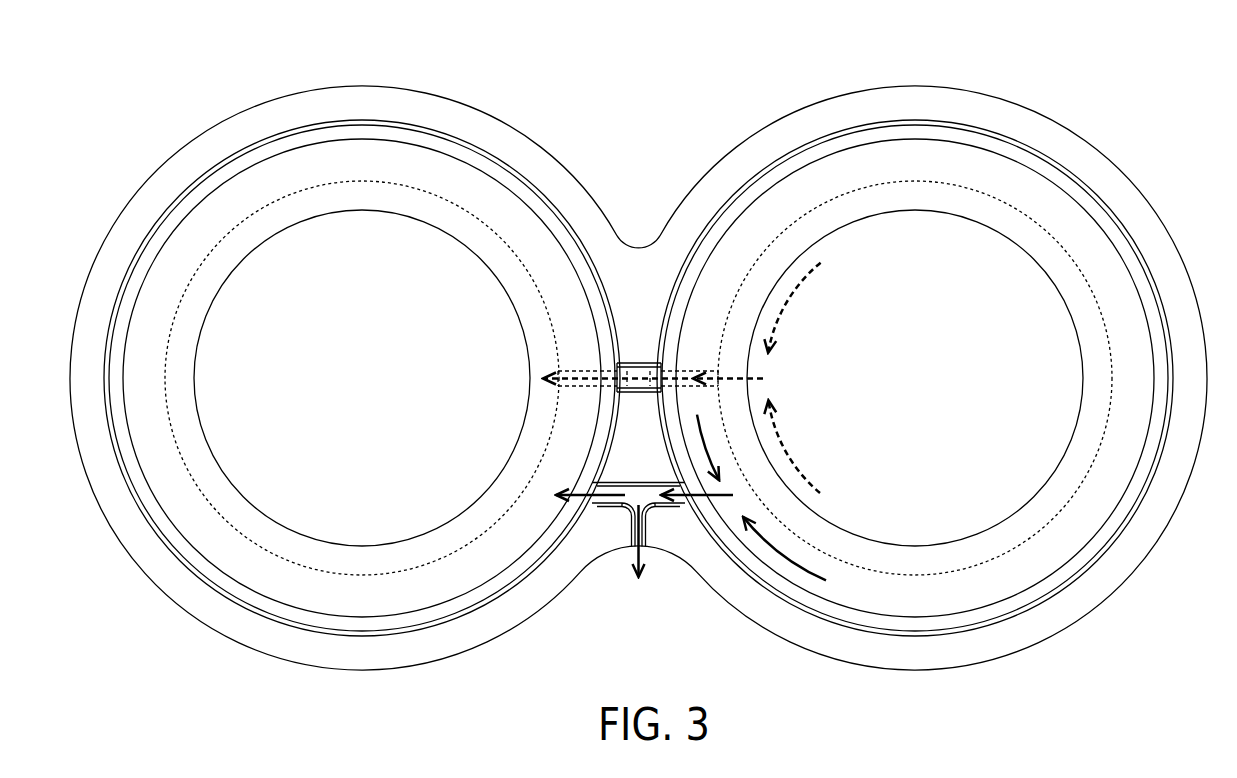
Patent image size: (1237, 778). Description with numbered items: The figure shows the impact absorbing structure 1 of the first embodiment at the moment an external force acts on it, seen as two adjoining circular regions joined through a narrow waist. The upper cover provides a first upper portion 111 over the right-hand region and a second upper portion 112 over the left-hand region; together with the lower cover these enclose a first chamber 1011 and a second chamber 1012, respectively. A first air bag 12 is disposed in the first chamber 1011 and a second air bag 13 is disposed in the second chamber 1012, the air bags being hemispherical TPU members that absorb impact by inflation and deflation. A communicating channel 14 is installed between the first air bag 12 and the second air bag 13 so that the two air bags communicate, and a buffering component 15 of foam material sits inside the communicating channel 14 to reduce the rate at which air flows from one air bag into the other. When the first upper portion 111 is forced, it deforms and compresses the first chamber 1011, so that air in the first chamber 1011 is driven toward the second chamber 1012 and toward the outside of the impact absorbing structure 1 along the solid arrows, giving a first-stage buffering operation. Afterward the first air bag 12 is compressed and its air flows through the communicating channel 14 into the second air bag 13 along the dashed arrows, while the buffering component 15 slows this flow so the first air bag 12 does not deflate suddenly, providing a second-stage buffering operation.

The impact absorbing structure 1 is at (155, 103).
The second upper portion 112 is at (308, 143).
The second air bag 13 is at (398, 185).
The second chamber 1012 is at (468, 188).
The communicating channel 14 is at (654, 363).
The buffering component 15 is at (640, 376).
The first air bag 12 is at (882, 178).
The first upper portion 111 is at (968, 142).
The first chamber 1011 is at (1043, 195).